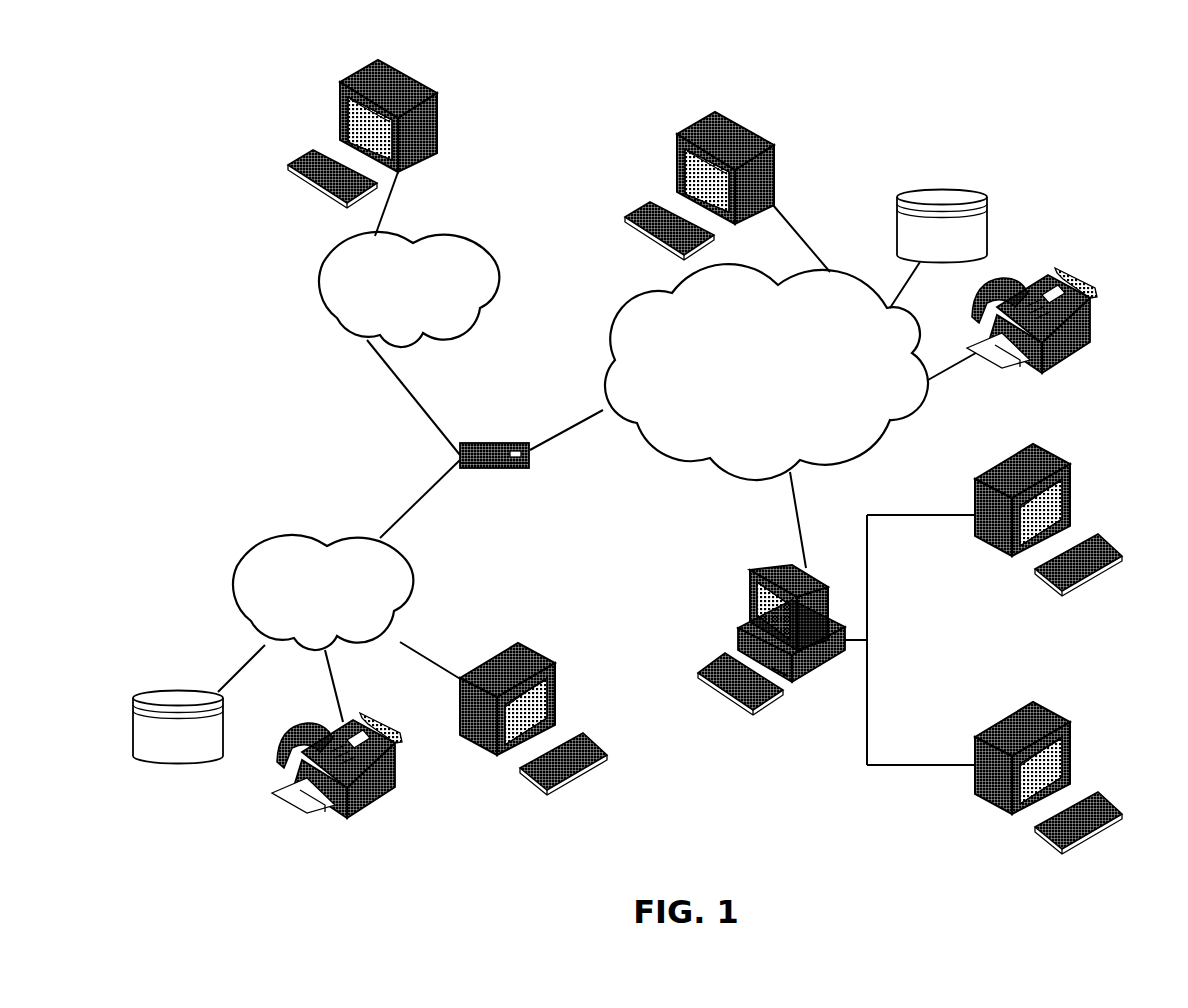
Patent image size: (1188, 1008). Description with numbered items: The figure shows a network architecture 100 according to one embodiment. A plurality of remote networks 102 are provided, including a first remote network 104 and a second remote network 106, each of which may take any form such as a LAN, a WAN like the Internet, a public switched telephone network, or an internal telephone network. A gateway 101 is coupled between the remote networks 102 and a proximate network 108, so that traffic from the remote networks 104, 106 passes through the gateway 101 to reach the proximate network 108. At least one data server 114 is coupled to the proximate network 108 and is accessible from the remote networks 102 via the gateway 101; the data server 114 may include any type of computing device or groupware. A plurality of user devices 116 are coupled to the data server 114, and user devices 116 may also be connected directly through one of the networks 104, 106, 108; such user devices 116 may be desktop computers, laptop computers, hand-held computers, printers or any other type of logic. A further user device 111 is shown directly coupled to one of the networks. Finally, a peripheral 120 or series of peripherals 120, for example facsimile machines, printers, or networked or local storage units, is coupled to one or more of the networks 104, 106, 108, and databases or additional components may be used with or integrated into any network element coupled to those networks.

The architecture 100 is at (652, 30).
The gateway 101 is at (495, 441).
The remote networks 102 is at (300, 372).
The first remote network 104 is at (240, 566).
The second remote network 106 is at (497, 292).
The proximate network 108 is at (893, 438).
The user device 111 is at (775, 183).
The data server 114 is at (745, 597).
The user devices 116 is at (440, 125).
The peripheral 120 is at (941, 188).